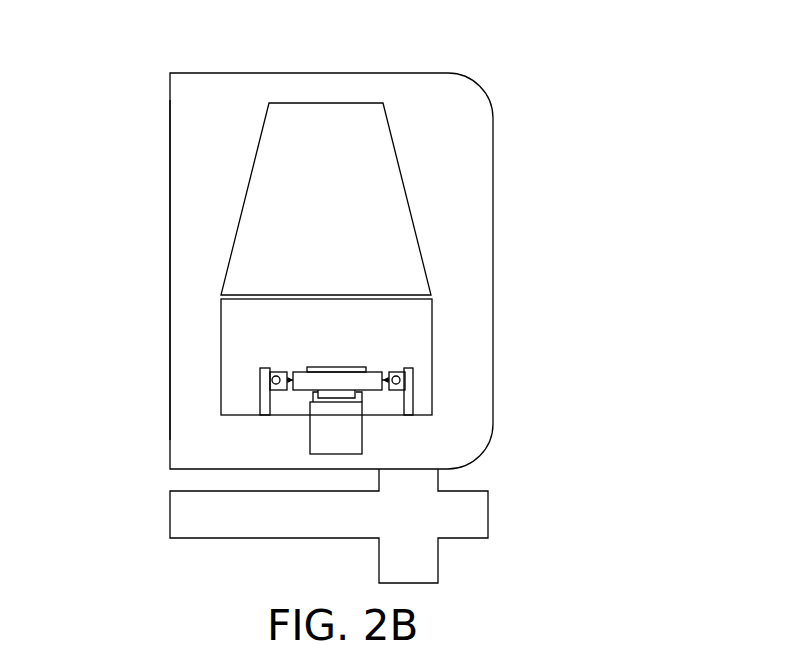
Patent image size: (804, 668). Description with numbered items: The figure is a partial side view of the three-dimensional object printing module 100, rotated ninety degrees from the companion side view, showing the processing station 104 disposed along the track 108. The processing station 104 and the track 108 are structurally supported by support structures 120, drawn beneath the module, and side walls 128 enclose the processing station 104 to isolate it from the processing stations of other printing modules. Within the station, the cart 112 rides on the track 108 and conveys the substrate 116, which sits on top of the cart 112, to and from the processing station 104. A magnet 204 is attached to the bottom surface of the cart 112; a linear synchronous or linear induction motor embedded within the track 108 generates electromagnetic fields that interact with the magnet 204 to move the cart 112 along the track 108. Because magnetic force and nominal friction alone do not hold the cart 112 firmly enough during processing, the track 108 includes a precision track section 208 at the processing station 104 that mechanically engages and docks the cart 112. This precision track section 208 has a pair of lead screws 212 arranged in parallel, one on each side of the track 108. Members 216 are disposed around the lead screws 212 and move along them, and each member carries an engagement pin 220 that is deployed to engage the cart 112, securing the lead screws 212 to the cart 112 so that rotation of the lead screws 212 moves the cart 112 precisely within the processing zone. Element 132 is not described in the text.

The three-dimensional object printing module 100 is at (112, 171).
The processing station 104 is at (166, 281).
The track 108 is at (318, 436).
The cart 112 is at (327, 380).
The substrate 116 is at (344, 365).
The support structures 120 is at (302, 527).
The side walls 128 is at (193, 114).
The light guide 132 is at (390, 130).
The magnet 204 is at (337, 396).
The precision track section 208 is at (286, 419).
The lead screws 212 is at (276, 376).
The members 216 is at (281, 372).
The engagement pins 220 is at (290, 378).